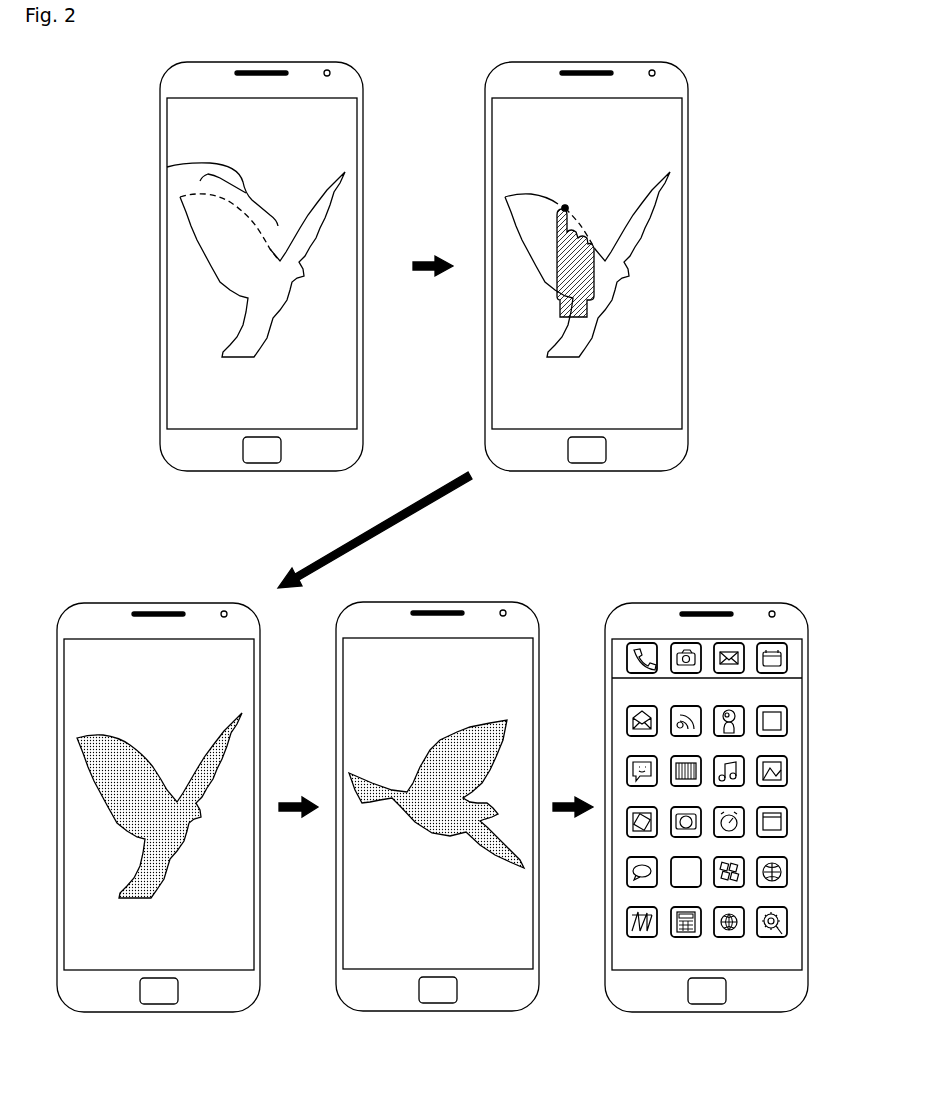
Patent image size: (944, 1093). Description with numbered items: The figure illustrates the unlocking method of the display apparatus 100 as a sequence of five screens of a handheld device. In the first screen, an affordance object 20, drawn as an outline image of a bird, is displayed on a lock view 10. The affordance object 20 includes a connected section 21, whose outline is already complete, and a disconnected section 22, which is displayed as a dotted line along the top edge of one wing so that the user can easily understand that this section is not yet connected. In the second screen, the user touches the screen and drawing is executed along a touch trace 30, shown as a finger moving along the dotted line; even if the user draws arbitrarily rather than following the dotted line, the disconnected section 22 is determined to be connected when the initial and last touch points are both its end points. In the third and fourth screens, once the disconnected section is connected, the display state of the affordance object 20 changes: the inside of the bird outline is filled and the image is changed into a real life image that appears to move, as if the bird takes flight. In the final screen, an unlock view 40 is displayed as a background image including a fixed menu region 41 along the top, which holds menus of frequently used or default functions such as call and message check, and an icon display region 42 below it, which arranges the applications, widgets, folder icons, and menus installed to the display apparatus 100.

The display apparatus 100 is at (350, 65).
The lock view 10 is at (348, 93).
The affordance object 20 is at (345, 172).
The connected section 21 is at (183, 231).
The disconnected section 22 is at (167, 167).
The touch trace 30 is at (565, 207).
The unlock view 40 is at (743, 786).
The fixed menu region 41 is at (797, 648).
The icon display region 42 is at (734, 812).